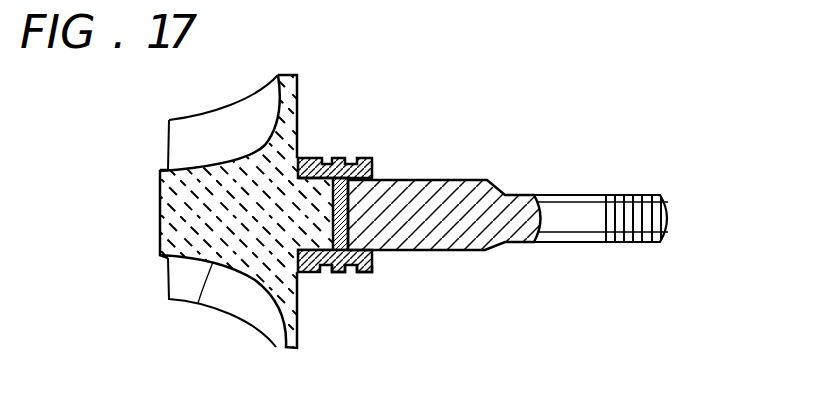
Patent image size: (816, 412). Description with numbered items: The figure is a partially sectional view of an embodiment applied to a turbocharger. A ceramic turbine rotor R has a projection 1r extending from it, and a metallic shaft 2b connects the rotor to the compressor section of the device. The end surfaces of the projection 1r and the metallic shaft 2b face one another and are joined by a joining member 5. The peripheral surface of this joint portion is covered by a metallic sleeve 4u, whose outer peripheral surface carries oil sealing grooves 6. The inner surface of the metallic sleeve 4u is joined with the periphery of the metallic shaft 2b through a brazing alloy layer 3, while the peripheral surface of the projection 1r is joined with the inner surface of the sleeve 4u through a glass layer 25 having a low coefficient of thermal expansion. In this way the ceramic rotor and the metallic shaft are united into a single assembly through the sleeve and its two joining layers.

The projection 1r is at (306, 270).
The ceramic turbine rotor R is at (198, 303).
The glass layer 25 is at (312, 157).
The oil sealing grooves 6 is at (321, 271).
The joining member 5 is at (362, 273).
The metallic sleeve 4u is at (373, 266).
The brazing alloy layer 3 is at (372, 178).
The metallic shaft 2b is at (468, 232).